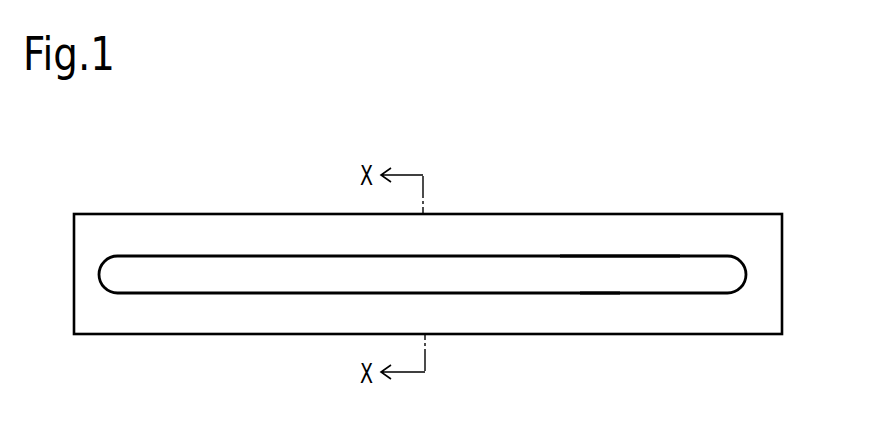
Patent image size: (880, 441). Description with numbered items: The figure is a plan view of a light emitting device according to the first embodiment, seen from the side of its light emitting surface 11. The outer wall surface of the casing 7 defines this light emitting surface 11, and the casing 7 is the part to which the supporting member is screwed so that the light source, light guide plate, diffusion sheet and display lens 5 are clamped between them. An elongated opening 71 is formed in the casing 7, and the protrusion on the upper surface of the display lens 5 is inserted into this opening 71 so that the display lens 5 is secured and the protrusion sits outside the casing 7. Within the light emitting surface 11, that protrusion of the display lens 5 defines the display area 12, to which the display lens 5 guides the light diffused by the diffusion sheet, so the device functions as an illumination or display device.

The light emitting surface 11 is at (732, 326).
The casing 7 is at (239, 334).
The display lens 5 is at (480, 268).
The display area 12 is at (613, 256).
The opening 71 is at (594, 288).